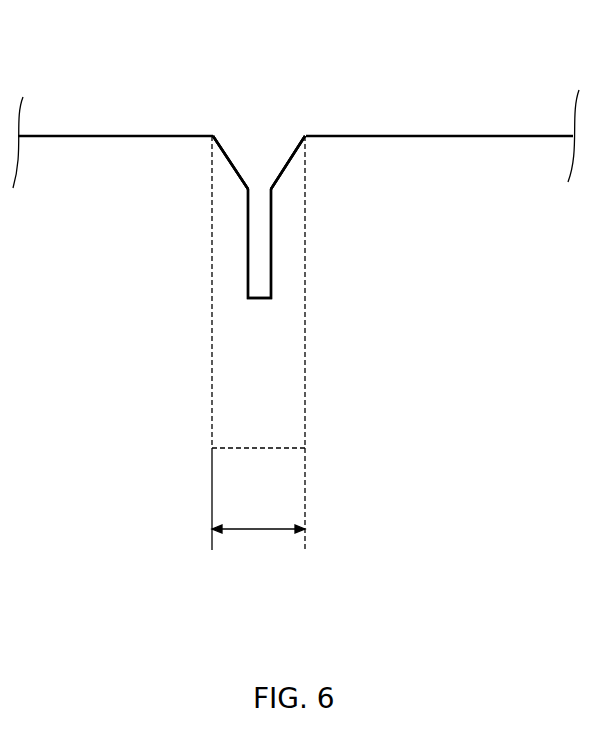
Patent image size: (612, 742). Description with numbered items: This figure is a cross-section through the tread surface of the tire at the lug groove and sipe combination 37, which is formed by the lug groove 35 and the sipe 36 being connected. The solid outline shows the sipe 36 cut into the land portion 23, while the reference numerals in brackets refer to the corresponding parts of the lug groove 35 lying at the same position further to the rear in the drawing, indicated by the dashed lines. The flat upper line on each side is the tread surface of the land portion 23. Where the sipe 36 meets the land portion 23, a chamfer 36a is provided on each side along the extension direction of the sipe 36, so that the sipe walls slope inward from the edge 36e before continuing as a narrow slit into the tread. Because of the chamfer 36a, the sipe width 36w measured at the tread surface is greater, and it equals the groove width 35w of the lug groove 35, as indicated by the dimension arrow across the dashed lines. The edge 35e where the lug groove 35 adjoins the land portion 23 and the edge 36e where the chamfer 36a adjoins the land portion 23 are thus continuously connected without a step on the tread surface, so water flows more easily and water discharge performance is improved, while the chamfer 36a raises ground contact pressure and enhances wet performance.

The land portion 23 is at (105, 135).
The edge 36e is at (274, 107).
The edge 35e is at (213, 134).
The chamfer 36a is at (230, 165).
The lug groove and sipe combination 37 is at (243, 121).
The sipe 36 is at (241, 306).
The lug groove 35 is at (232, 141).
The sipe width 36w is at (237, 585).
The groove width 35w is at (256, 532).